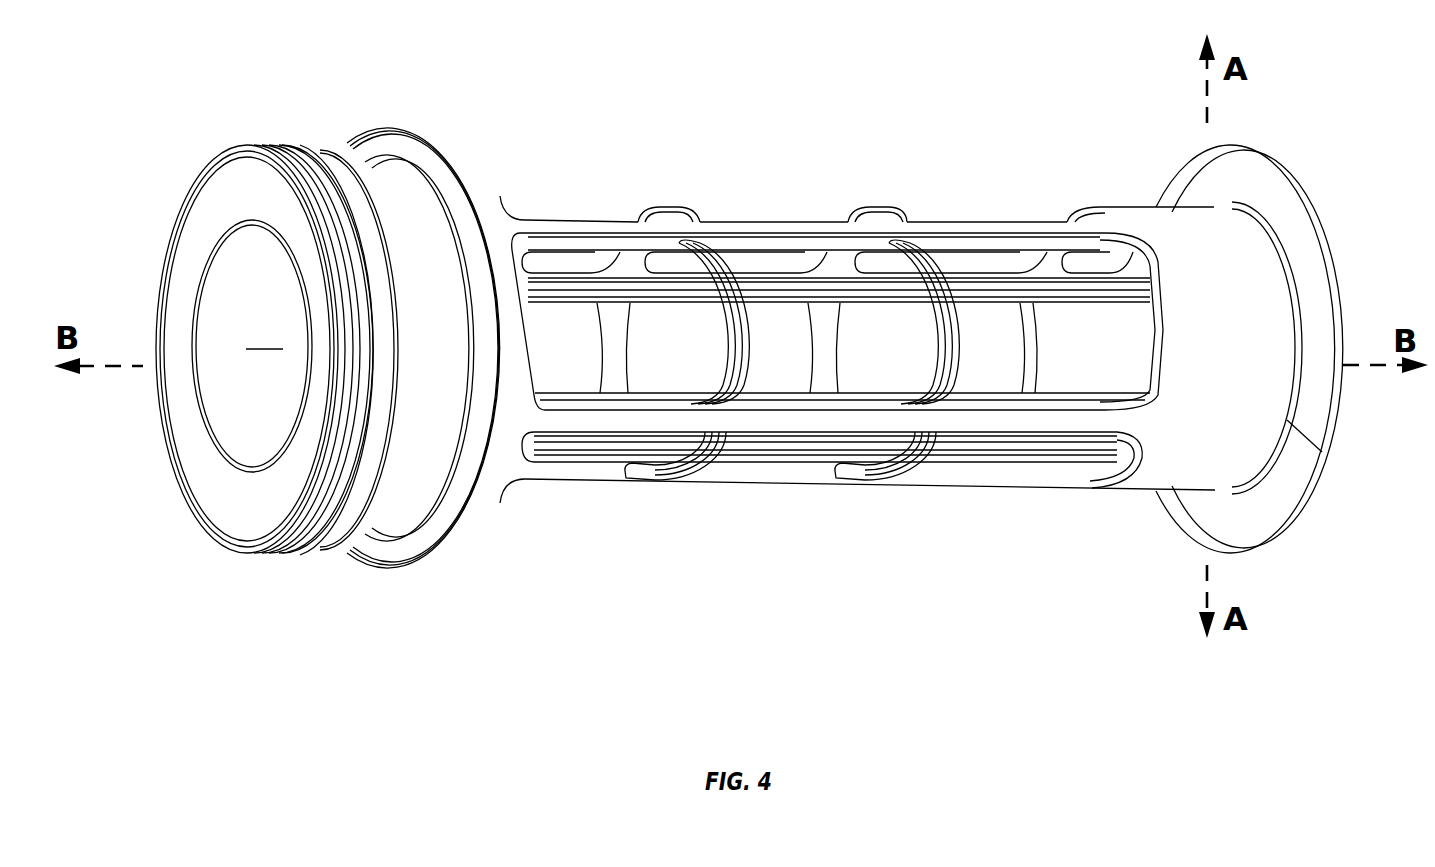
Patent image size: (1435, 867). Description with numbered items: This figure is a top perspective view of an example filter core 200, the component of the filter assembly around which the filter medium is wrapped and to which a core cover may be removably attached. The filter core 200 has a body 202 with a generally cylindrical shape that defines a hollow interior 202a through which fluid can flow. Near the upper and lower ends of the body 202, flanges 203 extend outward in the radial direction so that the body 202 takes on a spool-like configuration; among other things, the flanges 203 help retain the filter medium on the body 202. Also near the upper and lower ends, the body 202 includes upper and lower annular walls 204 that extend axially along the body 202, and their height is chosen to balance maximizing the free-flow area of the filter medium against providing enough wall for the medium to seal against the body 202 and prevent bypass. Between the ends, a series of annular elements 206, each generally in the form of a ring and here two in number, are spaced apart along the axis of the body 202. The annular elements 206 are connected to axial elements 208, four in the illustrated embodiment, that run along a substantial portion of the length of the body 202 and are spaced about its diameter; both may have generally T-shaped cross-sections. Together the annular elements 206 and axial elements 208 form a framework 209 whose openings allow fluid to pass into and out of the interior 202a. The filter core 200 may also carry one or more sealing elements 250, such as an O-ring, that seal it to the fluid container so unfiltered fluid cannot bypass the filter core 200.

The filter core 200 is at (1033, 98).
The body 202 is at (1045, 178).
The hollow interior 202a is at (786, 323).
The flanges 203 is at (413, 155).
The annular walls 204 is at (508, 416).
The annular elements 206 is at (878, 205).
The axial elements 208 is at (568, 225).
The framework 209 is at (640, 153).
The sealing element 250 is at (330, 147).